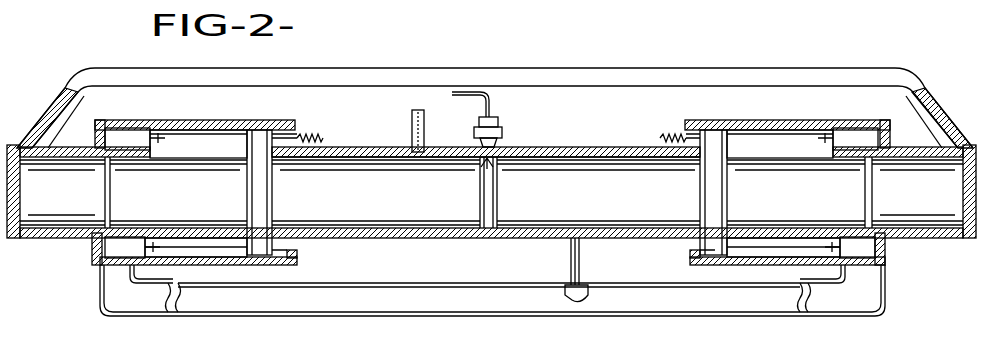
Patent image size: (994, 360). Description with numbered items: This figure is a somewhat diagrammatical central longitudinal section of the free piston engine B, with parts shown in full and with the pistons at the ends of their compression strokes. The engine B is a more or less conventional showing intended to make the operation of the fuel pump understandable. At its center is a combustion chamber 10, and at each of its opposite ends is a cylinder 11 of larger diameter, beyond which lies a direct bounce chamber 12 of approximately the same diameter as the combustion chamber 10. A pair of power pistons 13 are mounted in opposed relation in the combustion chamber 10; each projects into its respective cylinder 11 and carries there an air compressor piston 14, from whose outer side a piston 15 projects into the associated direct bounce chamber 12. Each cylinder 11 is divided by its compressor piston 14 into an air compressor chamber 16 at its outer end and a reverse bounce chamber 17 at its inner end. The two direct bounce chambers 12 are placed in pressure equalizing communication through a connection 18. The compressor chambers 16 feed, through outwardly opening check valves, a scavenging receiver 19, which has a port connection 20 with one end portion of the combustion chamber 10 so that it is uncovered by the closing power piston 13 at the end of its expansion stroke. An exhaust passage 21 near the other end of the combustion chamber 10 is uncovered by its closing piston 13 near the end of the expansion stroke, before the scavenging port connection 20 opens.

The combustion chamber 10 is at (486, 222).
The cylinder 11 is at (213, 125).
The direct bounce chamber 12 is at (491, 192).
The power piston 13 is at (487, 187).
The air compressor piston 14 is at (258, 205).
The piston 15 is at (487, 187).
The air compressor chamber 16 is at (491, 145).
The reverse bounce chamber 17 is at (275, 262).
The connection 18 is at (343, 77).
The scavenging receiver 19 is at (390, 304).
The port connection 20 is at (571, 248).
The exhaust passage 21 is at (413, 131).
The engine B is at (597, 147).